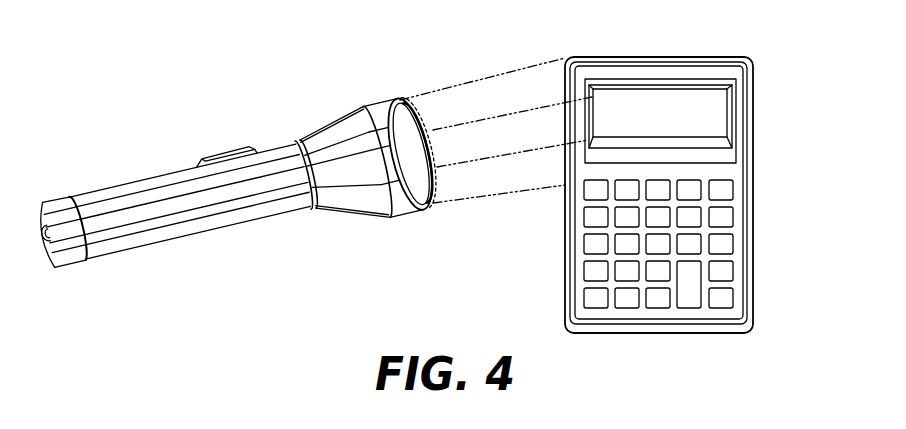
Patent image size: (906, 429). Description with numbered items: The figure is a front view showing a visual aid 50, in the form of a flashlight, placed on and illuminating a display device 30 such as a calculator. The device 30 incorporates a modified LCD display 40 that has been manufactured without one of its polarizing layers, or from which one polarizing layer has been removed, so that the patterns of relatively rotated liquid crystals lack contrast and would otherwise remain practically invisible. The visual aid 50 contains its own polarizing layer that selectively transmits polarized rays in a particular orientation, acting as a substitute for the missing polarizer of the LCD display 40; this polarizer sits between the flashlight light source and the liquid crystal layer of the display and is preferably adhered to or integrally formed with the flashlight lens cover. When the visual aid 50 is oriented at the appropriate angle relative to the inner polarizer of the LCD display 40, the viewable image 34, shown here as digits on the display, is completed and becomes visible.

The device 30 is at (684, 177).
The viewable image 34 is at (676, 111).
The LCD display 40 is at (660, 92).
The visual aid 50 is at (311, 177).